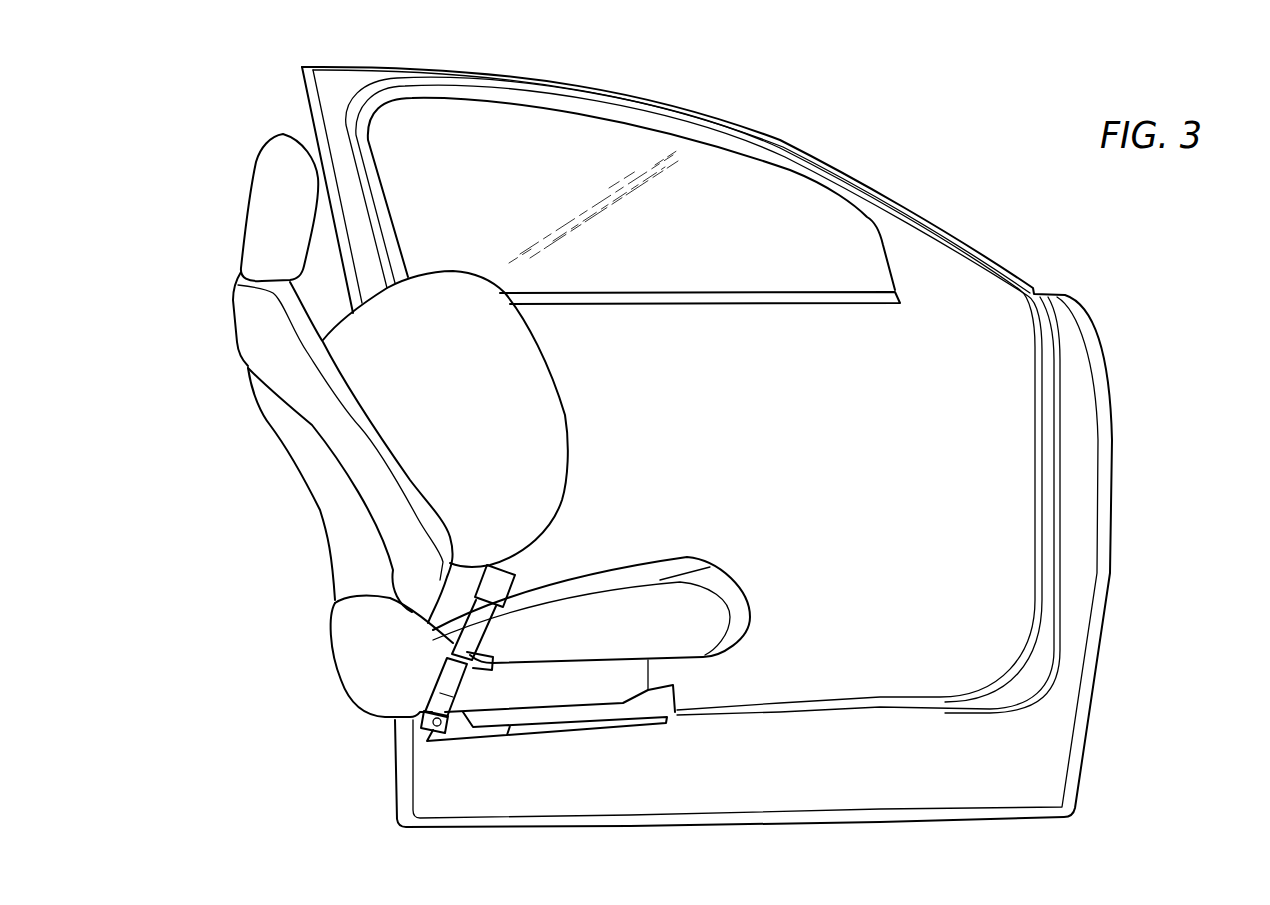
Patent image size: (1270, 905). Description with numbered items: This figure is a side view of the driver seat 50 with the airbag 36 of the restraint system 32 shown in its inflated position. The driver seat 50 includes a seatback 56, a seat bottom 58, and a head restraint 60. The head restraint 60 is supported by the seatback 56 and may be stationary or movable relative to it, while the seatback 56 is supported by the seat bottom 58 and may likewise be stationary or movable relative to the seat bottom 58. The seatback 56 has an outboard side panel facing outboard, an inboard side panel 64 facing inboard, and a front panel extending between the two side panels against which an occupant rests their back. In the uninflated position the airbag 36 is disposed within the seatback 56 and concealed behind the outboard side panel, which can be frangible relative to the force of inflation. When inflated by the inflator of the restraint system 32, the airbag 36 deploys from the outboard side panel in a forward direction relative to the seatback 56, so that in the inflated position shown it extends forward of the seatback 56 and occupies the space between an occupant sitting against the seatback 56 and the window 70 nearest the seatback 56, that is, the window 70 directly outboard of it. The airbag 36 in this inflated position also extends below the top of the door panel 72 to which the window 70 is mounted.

The restraint system 32 is at (707, 447).
The airbag 36 is at (571, 437).
The driver seat 50 is at (514, 411).
The seatback 56 is at (326, 447).
The seat bottom 58 is at (751, 612).
The head restraint 60 is at (273, 135).
The inboard side panel 64 is at (353, 452).
The window 70 is at (720, 187).
The door panel 72 is at (680, 290).